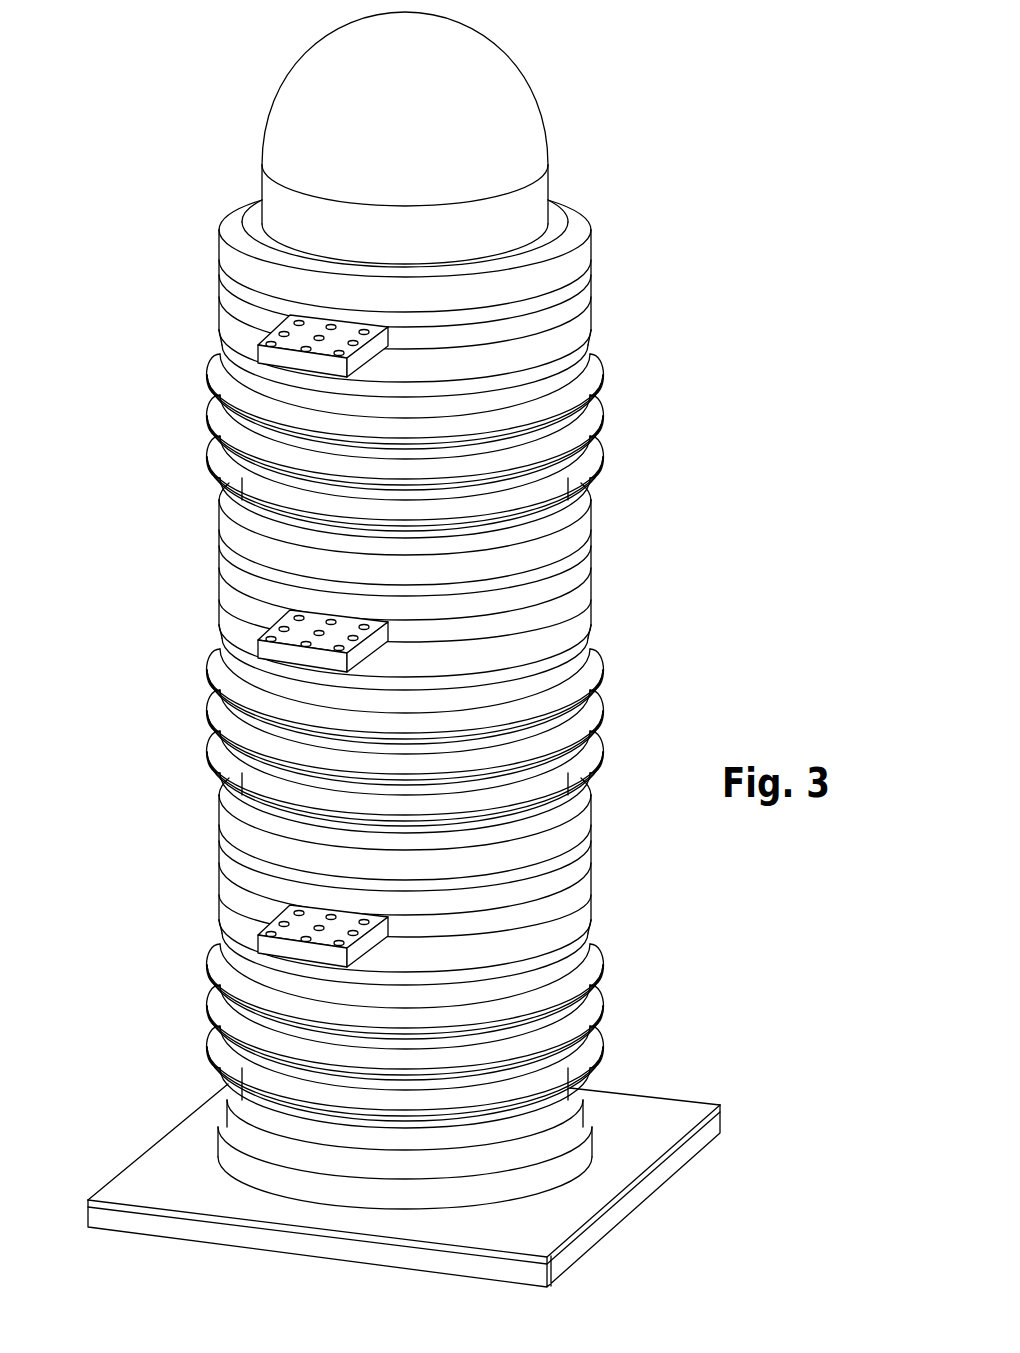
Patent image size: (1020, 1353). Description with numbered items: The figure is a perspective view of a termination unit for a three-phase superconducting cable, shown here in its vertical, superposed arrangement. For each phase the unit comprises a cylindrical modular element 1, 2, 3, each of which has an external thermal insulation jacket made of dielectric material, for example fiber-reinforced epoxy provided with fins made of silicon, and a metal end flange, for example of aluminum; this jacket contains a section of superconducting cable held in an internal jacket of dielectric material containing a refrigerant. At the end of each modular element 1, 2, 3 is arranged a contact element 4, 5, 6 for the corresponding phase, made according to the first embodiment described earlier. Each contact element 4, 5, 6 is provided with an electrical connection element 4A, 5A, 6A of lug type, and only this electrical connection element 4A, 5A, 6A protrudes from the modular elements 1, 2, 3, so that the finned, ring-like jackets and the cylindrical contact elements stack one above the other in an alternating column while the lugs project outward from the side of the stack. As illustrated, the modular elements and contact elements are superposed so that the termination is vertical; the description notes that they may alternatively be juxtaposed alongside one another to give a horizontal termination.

The cylindrical modular element 1 is at (627, 1032).
The cylindrical modular element 2 is at (629, 740).
The cylindrical modular element 3 is at (625, 436).
The contact element 4 is at (588, 882).
The contact element 5 is at (586, 598).
The contact element 6 is at (574, 313).
The electrical connection element 4A is at (266, 944).
The electrical connection element 5A is at (296, 664).
The electrical connection element 6A is at (296, 367).